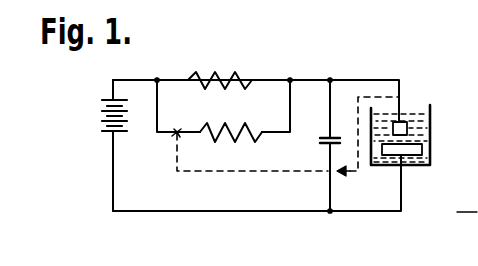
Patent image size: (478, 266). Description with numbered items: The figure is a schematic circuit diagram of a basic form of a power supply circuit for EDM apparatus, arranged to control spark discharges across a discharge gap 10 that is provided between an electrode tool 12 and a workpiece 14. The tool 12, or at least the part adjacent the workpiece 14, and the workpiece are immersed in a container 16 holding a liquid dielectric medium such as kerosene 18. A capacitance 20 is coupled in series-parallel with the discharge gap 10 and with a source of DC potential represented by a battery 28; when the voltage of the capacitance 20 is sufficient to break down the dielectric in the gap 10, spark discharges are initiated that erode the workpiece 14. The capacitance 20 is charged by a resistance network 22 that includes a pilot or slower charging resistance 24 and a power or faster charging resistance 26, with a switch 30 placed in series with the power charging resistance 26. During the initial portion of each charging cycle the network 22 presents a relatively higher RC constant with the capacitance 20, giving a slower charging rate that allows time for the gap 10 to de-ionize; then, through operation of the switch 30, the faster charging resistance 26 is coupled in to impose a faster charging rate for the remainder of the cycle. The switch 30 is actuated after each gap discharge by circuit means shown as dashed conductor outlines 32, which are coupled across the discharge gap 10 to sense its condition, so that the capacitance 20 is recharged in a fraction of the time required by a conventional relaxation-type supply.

The discharge gap 10 is at (421, 144).
The electrode tool 12 is at (407, 128).
The workpiece 14 is at (414, 157).
The container 16 is at (389, 166).
The kerosene 18 is at (413, 115).
The capacitance 20 is at (322, 137).
The resistance network 22 is at (247, 97).
The pilot charging resistance 24 is at (222, 72).
The power charging resistance 26 is at (236, 140).
The battery 28 is at (100, 116).
The switch 30 is at (175, 134).
The circuit means 32 is at (312, 173).